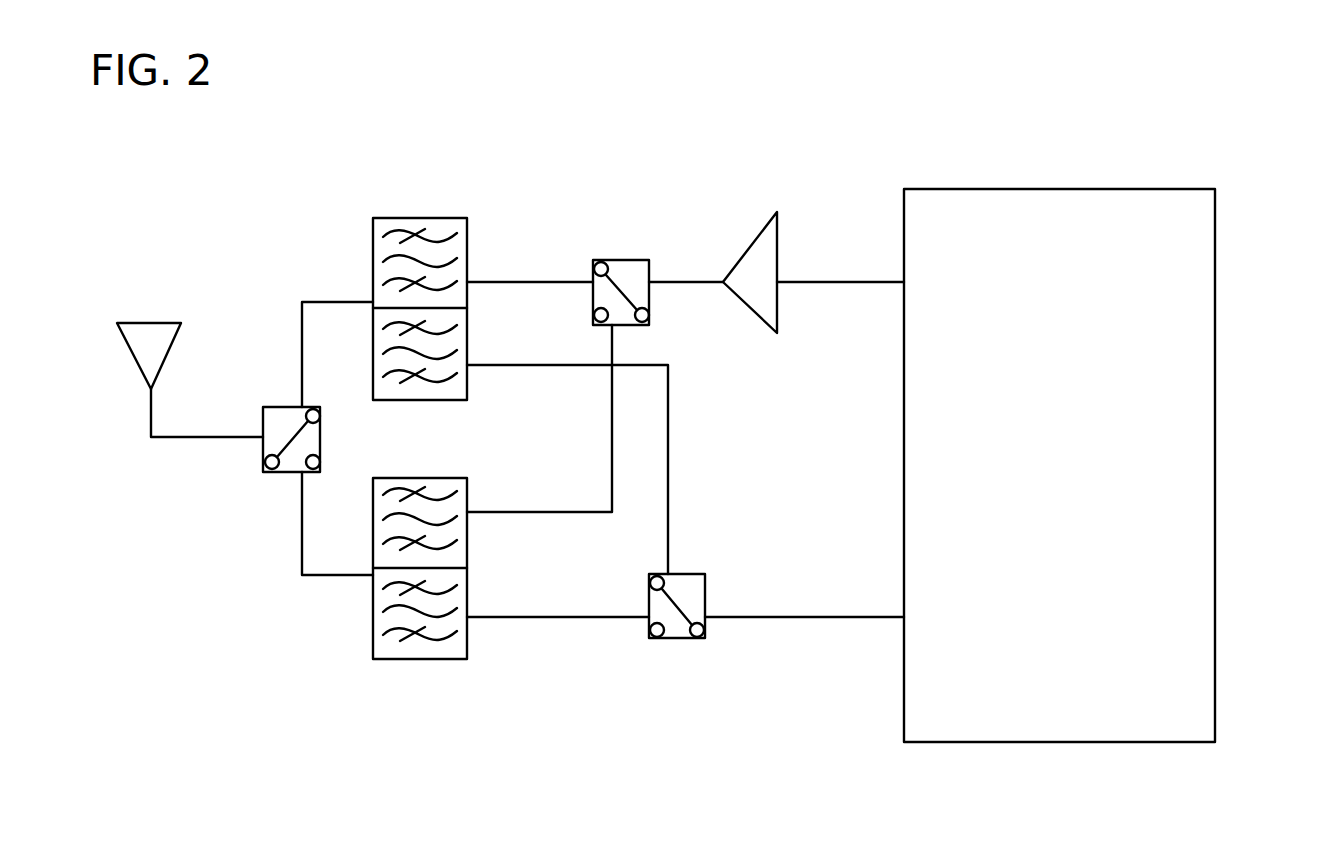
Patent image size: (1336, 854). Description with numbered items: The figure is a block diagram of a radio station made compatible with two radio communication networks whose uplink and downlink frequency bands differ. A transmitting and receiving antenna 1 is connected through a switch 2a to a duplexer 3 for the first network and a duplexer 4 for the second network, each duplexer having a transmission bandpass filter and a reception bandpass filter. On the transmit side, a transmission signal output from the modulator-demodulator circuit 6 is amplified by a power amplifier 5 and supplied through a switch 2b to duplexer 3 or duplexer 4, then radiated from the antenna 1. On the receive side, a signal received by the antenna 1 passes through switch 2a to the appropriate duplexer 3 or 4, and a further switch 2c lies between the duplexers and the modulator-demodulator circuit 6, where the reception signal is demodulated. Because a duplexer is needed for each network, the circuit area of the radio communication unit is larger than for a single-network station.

The transmitting and receiving antenna 1 is at (168, 345).
The switch 2a is at (267, 453).
The switch 2b is at (649, 267).
The switch 2c is at (702, 593).
The duplexer 3 is at (467, 257).
The duplexer 4 is at (468, 592).
The power amplifier 5 is at (778, 230).
The modulator-demodulator circuit 6 is at (1217, 230).